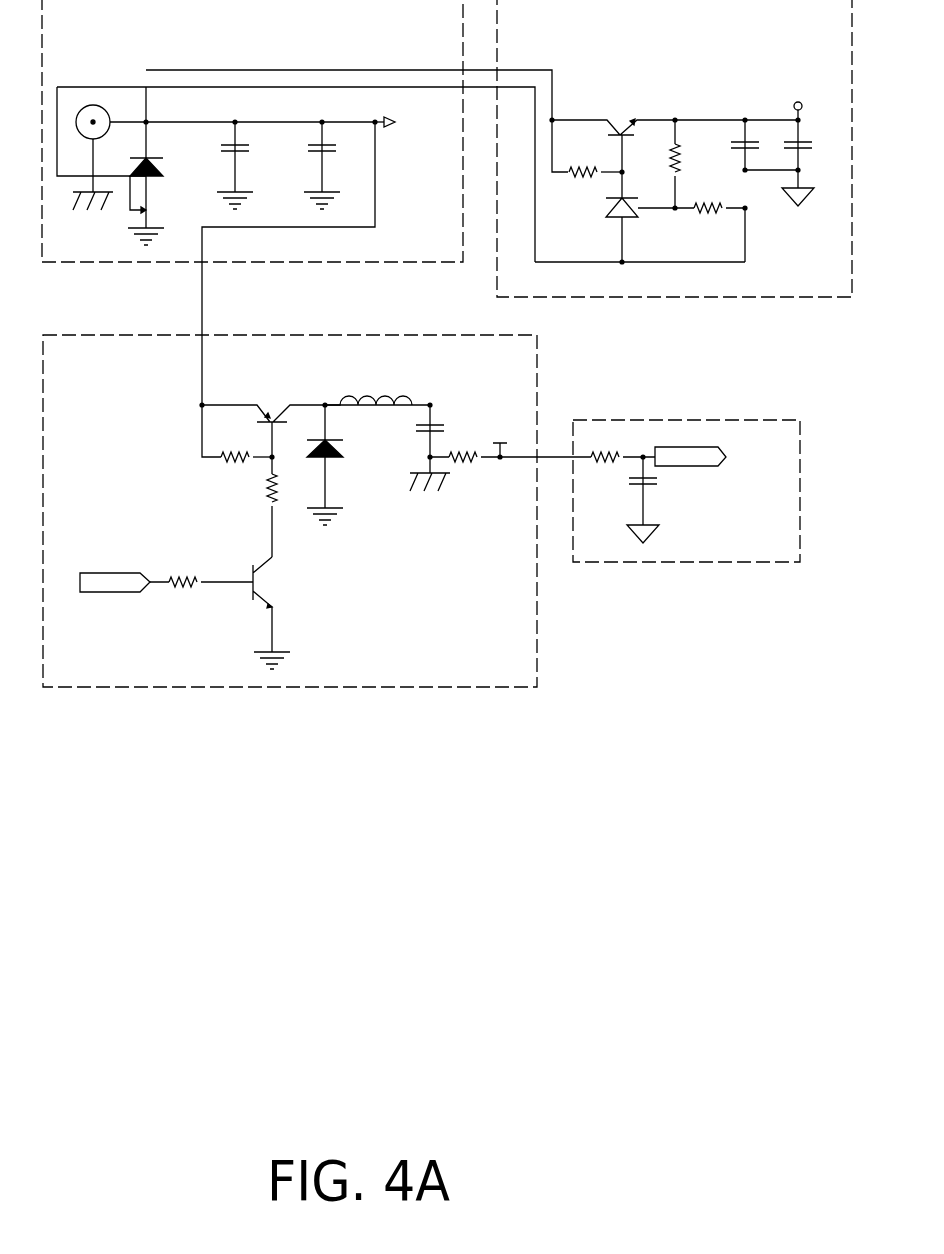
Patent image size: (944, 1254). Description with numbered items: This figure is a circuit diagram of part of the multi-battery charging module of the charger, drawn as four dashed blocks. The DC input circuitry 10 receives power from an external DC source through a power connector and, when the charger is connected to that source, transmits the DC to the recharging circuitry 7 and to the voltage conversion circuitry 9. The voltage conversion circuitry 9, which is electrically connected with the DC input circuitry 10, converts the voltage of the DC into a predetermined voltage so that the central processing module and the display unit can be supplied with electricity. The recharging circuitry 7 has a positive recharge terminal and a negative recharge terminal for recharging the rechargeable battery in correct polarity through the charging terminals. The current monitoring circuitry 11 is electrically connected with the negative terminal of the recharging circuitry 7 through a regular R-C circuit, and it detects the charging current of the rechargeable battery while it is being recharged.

The recharging circuitry 7 is at (308, 511).
The voltage conversion circuitry 9 is at (674, 148).
The DC input circuitry 10 is at (297, 202).
The current monitoring circuitry 11 is at (686, 491).